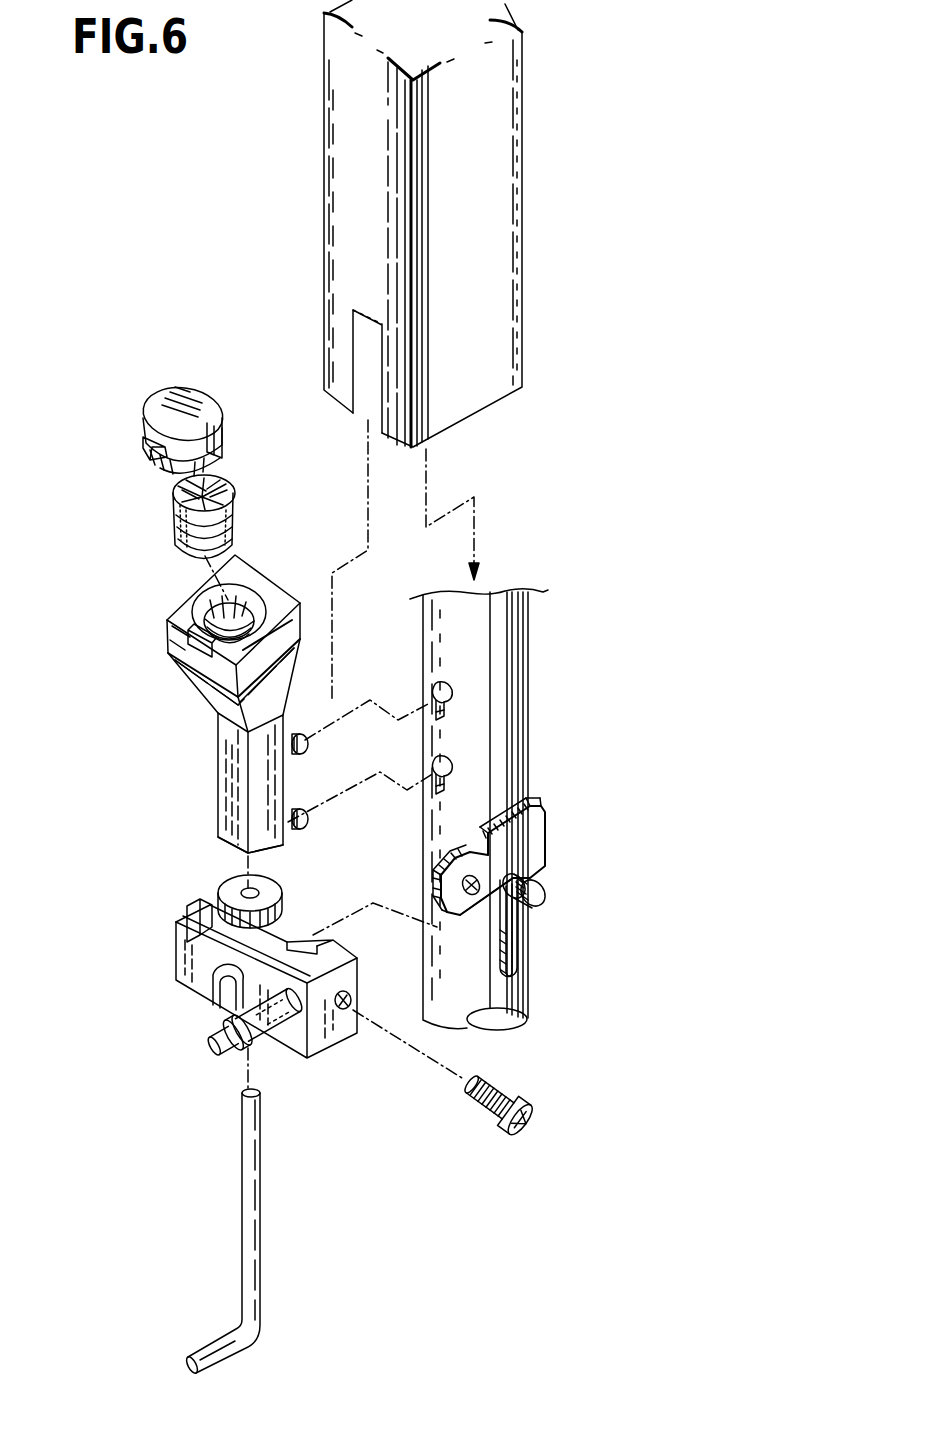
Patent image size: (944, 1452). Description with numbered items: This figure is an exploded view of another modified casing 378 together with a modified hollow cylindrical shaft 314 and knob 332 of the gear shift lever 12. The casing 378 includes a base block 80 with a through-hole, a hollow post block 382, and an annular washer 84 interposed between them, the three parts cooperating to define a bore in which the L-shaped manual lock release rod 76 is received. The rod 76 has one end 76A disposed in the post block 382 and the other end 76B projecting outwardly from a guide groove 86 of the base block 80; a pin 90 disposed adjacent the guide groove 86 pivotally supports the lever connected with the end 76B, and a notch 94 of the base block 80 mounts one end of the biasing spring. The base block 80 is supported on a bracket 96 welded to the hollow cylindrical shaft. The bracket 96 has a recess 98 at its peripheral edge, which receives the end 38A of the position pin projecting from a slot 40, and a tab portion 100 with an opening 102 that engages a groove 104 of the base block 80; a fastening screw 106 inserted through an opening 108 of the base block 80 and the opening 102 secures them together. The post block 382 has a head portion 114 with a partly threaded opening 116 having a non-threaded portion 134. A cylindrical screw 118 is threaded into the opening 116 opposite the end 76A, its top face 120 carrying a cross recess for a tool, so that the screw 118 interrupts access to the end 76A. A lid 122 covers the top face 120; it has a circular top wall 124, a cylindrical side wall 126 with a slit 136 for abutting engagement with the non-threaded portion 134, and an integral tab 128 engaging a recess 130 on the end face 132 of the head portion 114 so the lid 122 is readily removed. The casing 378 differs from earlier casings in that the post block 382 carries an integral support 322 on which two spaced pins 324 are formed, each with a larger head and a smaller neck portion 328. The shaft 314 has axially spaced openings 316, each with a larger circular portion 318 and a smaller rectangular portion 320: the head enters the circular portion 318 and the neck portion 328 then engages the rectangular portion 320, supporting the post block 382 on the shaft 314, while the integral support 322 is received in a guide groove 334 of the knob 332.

The gear shift lever 12 is at (535, 79).
The knob 332 is at (508, 216).
The guide groove 334 is at (372, 360).
The integral support 322 is at (330, 700).
The hollow cylindrical shaft 314 is at (516, 652).
The openings 316 is at (440, 690).
The circular portion 318 is at (448, 700).
The rectangular portion 320 is at (452, 718).
The bracket 96 is at (535, 845).
The opening 102 is at (462, 876).
The recess 98 is at (540, 872).
The end of position pin 38A is at (540, 898).
The slots 40 is at (512, 955).
The tab portion 100 is at (468, 917).
The lid 122 is at (148, 408).
The top wall 124 is at (185, 398).
The side wall 126 is at (226, 424).
The tab 128 is at (143, 448).
The slit 136 is at (213, 467).
The top face 120 is at (173, 496).
The screw 118 is at (255, 490).
The head portion 114 is at (200, 675).
The recess 130 is at (172, 656).
The end face 132 is at (205, 585).
The opening 116 is at (246, 590).
The non-threaded portion 134 is at (205, 610).
The hollow post block 382 is at (218, 780).
The casing 378 is at (166, 831).
The pins 324 is at (306, 738).
The neck portion 328 is at (310, 745).
The base block 80 is at (175, 952).
The groove 104 is at (303, 940).
The notch 94 is at (187, 922).
The annular washer 84 is at (222, 896).
The guide groove 86 is at (212, 996).
The pin 90 is at (268, 1028).
The opening 108 is at (347, 1010).
The fastening screw 106 is at (538, 1120).
The manual lock release rod 76 is at (248, 1205).
The end of manual lock release rod 76A is at (246, 1120).
The end of manual lock release rod 76B is at (240, 1346).